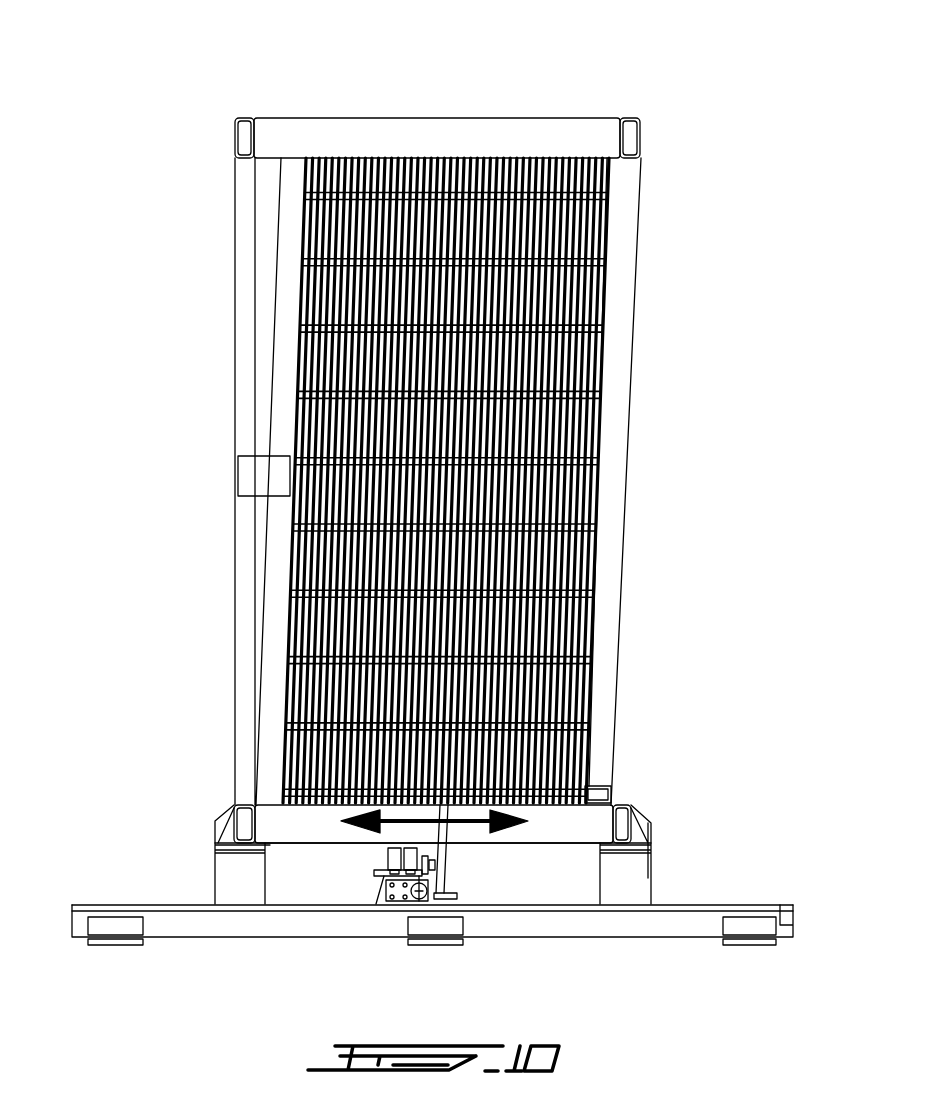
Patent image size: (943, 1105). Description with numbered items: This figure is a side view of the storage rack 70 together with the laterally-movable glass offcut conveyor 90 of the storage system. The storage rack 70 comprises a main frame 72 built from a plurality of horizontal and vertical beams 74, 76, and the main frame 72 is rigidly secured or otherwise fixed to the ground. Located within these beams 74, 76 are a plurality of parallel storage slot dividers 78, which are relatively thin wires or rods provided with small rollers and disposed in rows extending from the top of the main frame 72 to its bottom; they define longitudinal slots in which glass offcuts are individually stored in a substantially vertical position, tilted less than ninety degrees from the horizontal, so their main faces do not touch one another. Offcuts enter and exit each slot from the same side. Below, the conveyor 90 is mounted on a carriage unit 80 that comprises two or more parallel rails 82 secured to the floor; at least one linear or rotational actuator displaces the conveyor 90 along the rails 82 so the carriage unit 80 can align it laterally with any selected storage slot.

The storage rack 70 is at (162, 162).
The main frame 72 is at (216, 779).
The horizontal beams 74 is at (597, 626).
The vertical beams 76 is at (551, 128).
The storage slot dividers 78 is at (588, 388).
The carriage unit 80 is at (688, 879).
The parallel rails 82 is at (740, 897).
The laterally-movable glass offcut conveyor 90 is at (338, 873).